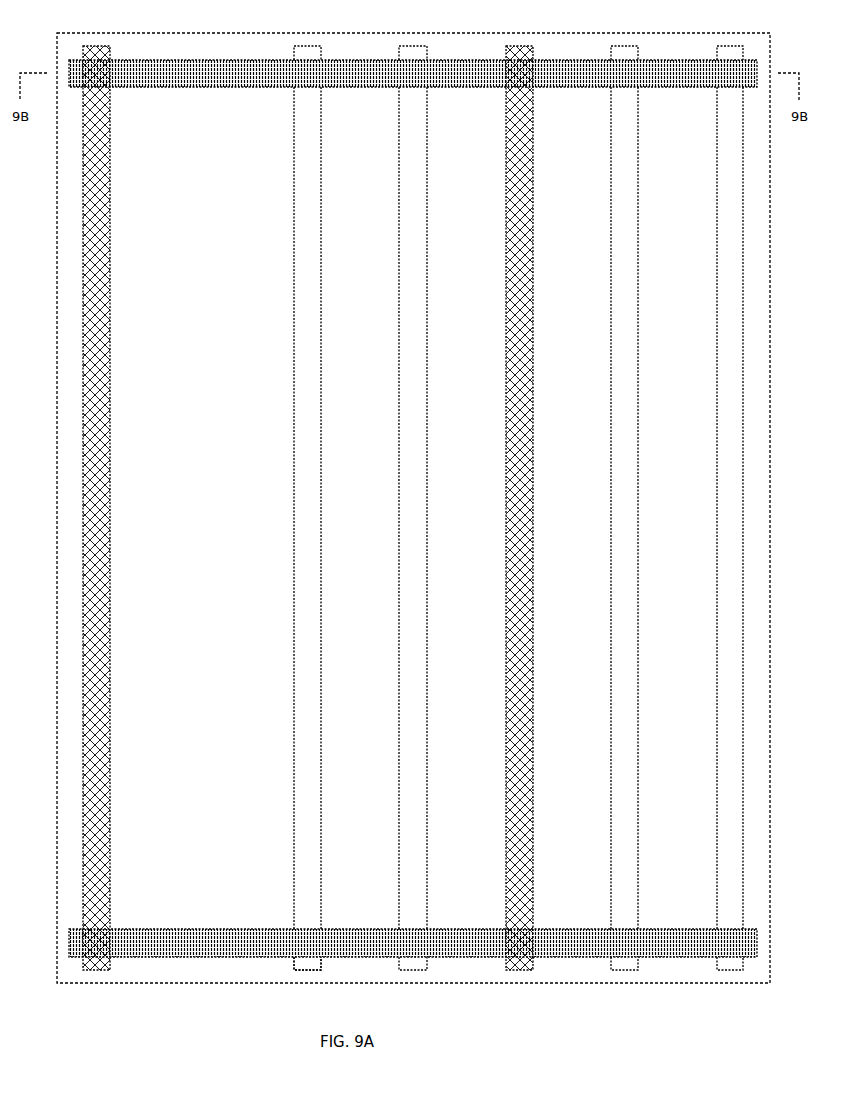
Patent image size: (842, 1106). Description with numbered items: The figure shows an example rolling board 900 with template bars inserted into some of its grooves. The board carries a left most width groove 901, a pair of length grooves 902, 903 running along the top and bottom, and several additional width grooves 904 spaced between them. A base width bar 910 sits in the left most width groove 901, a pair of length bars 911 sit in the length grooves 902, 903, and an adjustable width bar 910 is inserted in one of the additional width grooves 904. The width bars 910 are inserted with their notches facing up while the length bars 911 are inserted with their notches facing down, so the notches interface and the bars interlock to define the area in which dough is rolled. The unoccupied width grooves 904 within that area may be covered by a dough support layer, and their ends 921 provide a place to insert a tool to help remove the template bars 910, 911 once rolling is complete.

The rolling board 900 is at (100, 33).
The left most width groove 901 is at (128, 232).
The length groove 902 is at (165, 105).
The length groove 903 is at (203, 915).
The additional width grooves 904 is at (311, 640).
The width bar 910 is at (98, 335).
The length bar 911 is at (225, 73).
The ends of unoccupied width grooves 921 is at (305, 962).